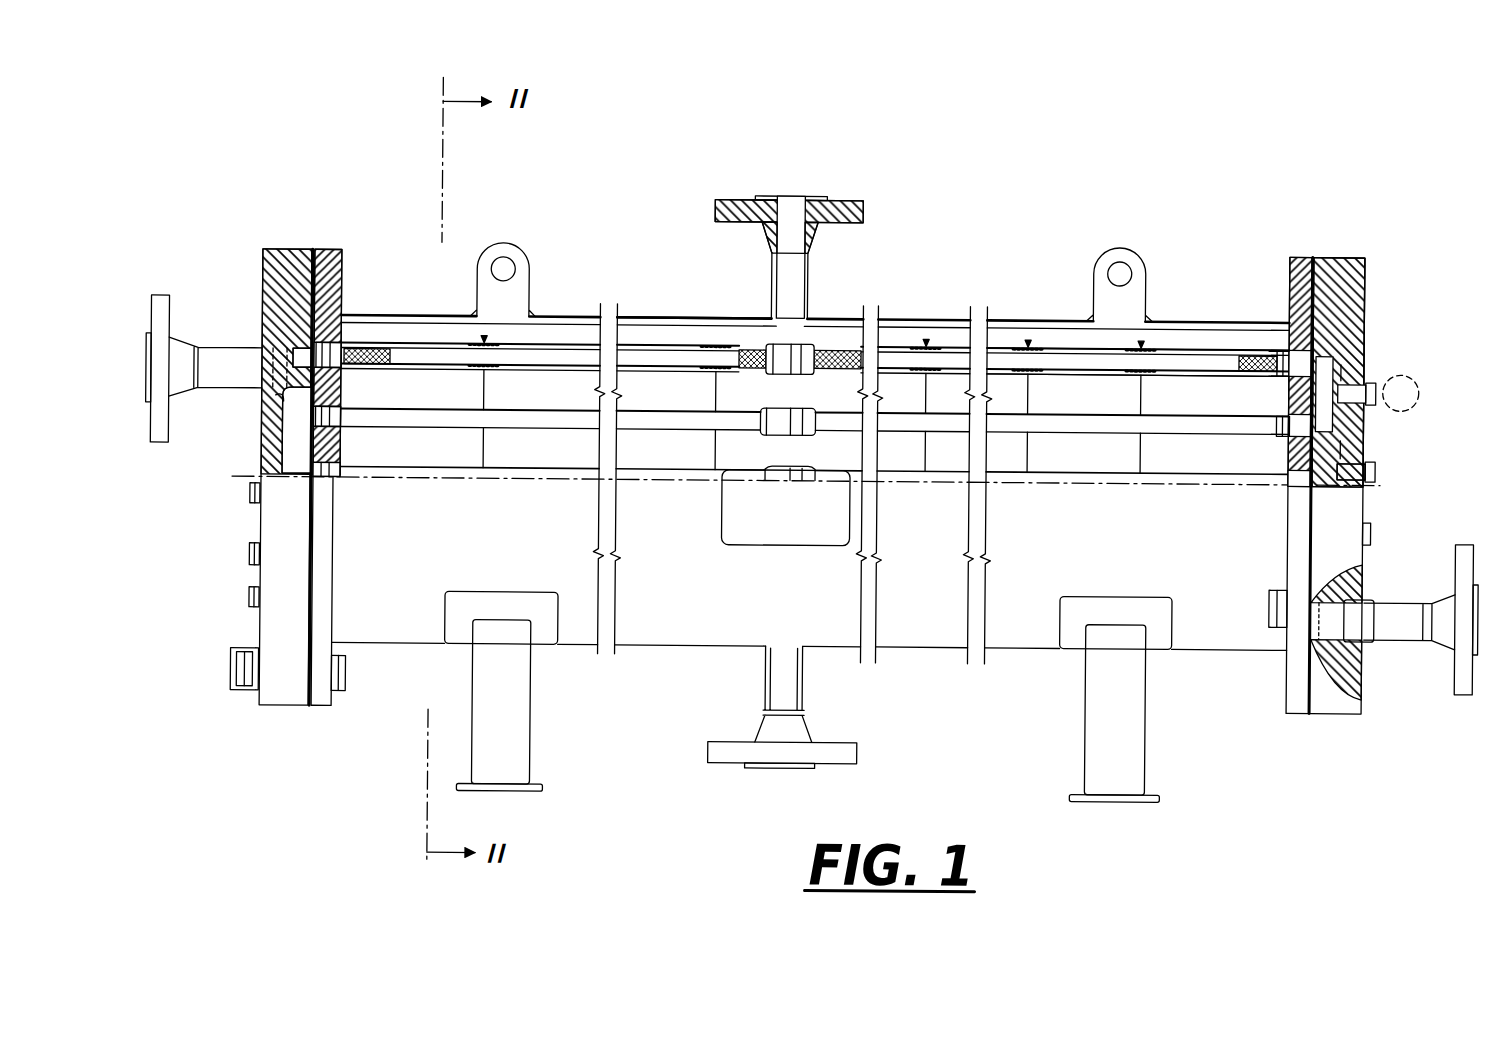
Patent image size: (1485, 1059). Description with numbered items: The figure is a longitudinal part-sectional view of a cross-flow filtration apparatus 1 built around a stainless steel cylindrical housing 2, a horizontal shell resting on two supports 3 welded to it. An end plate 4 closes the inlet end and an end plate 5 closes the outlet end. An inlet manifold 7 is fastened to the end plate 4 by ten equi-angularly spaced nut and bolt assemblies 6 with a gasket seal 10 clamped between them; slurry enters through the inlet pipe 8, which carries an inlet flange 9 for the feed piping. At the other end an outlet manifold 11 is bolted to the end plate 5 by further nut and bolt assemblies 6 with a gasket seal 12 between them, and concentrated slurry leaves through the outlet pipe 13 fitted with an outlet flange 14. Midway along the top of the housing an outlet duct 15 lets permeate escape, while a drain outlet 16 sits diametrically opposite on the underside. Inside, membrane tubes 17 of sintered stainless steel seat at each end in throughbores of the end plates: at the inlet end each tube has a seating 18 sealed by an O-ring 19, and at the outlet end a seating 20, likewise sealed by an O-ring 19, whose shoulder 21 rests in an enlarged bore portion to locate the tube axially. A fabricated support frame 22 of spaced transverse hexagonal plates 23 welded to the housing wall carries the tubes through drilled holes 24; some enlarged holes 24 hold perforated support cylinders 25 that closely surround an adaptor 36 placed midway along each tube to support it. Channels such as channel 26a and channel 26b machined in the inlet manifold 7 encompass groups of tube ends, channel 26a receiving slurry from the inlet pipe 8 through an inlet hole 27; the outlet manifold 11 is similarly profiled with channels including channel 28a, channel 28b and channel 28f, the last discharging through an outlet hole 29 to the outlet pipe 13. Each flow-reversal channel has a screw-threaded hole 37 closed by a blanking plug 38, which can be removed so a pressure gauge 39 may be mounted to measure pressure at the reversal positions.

The filtration apparatus 1 is at (1190, 208).
The cylindrical housing 2 is at (943, 318).
The supports 3 is at (520, 710).
The end plate 4 is at (331, 253).
The end plate 5 is at (1297, 253).
The nut and bolt assemblies 6 is at (246, 676).
The inlet manifold 7 is at (281, 253).
The inlet pipe 8 is at (208, 352).
The inlet flange 9 is at (158, 300).
The gasket seal 10 is at (312, 253).
The outlet manifold 11 is at (1346, 253).
The gasket seal 12 is at (1313, 253).
The outlet pipe 13 is at (1406, 637).
The outlet flange 14 is at (1464, 689).
The outlet duct 15 is at (791, 198).
The drain outlet 16 is at (768, 683).
The membrane tube 17 is at (420, 353).
The seating 18 is at (342, 424).
The O-ring 19 is at (342, 364).
The seating 20 is at (1282, 430).
The shoulder 21 is at (1290, 349).
The support frame 22 is at (655, 311).
The transverse hexagonal plates 23 is at (483, 443).
The holes 24 is at (483, 388).
The perforated support cylinders 25 is at (1047, 346).
The channel 26a is at (300, 360).
The channel 26b is at (300, 446).
The inlet hole 27 is at (276, 408).
The channel 28a is at (1352, 358).
The channel 28b is at (1352, 452).
The channel 28f is at (1328, 645).
The outlet hole 29 is at (1362, 678).
The adaptor 36 is at (790, 374).
The screw-threaded hole 37 is at (1374, 465).
The blanking plug 38 is at (250, 557).
The pressure gauge 39 is at (1416, 380).